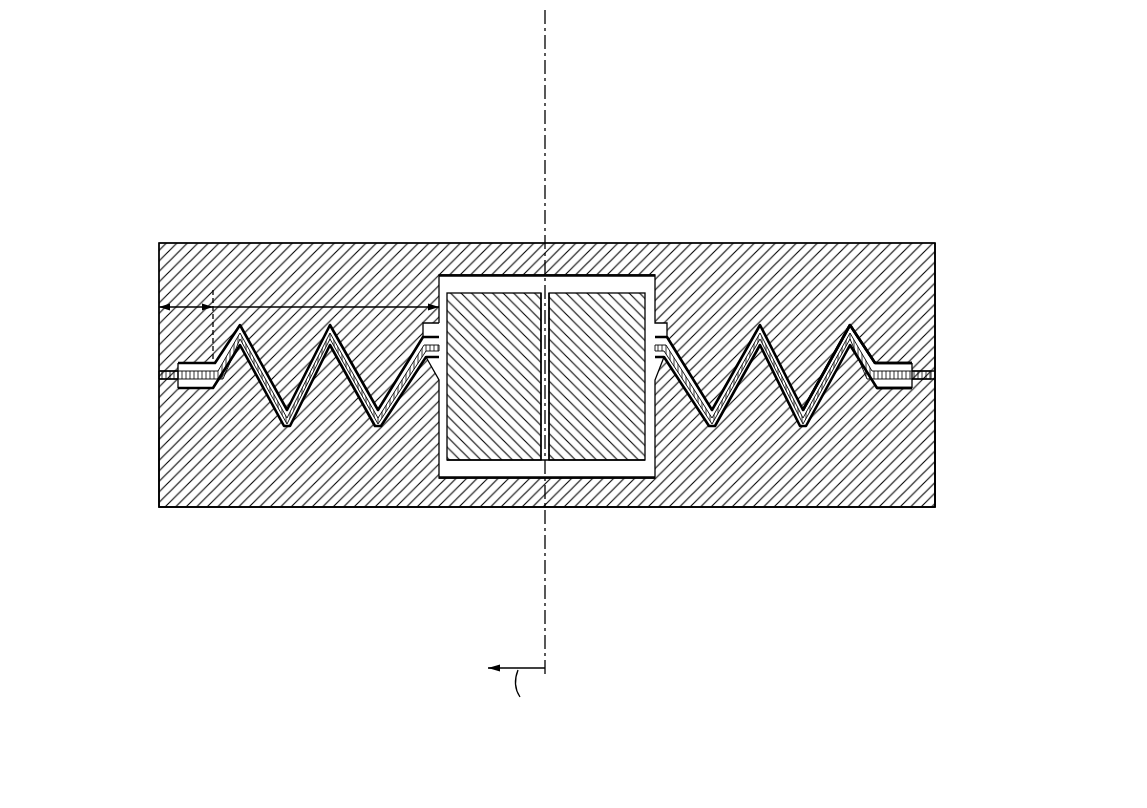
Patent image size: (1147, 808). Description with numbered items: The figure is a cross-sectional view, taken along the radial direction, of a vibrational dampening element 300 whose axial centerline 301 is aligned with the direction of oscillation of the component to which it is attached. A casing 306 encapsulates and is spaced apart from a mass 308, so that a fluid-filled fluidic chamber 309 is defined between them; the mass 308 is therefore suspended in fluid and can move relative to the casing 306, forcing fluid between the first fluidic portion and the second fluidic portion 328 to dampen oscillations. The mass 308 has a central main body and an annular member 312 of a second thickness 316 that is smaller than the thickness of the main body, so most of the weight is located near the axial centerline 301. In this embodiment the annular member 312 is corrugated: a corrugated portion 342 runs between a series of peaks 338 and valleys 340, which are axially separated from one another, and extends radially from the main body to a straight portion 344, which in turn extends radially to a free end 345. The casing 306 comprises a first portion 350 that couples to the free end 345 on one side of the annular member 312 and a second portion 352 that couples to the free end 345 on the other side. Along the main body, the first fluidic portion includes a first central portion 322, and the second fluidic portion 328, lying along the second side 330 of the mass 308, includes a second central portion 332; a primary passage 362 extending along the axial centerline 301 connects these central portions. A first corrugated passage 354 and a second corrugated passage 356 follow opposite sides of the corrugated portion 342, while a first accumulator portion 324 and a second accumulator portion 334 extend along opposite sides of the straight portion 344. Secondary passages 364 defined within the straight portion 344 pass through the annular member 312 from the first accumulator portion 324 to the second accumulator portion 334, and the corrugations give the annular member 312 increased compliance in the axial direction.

The vibrational dampening element 300 is at (142, 174).
The axial centerline 301 is at (549, 26).
The casing 306 is at (935, 380).
The mass 308 is at (473, 315).
The fluidic chamber 309 is at (547, 270).
The annular member 312 is at (780, 352).
The second thickness 316 is at (608, 307).
The first central portion 322 is at (583, 272).
The first accumulator portion 324 is at (934, 345).
The second fluidic portion 328 is at (604, 466).
The second side 330 is at (483, 462).
The second central portion 332 is at (578, 484).
The second accumulator portion 334 is at (908, 396).
The peaks 338 is at (755, 320).
The valleys 340 is at (768, 352).
The corrugated portion 342 is at (330, 306).
The straight portion 344 is at (193, 306).
The free end 345 is at (180, 373).
The first portion 350 is at (159, 258).
The second portion 352 is at (159, 432).
The first corrugated passage 354 is at (857, 326).
The second corrugated passage 356 is at (826, 412).
The primary passage 362 is at (540, 318).
The secondary passages 364 is at (158, 307).